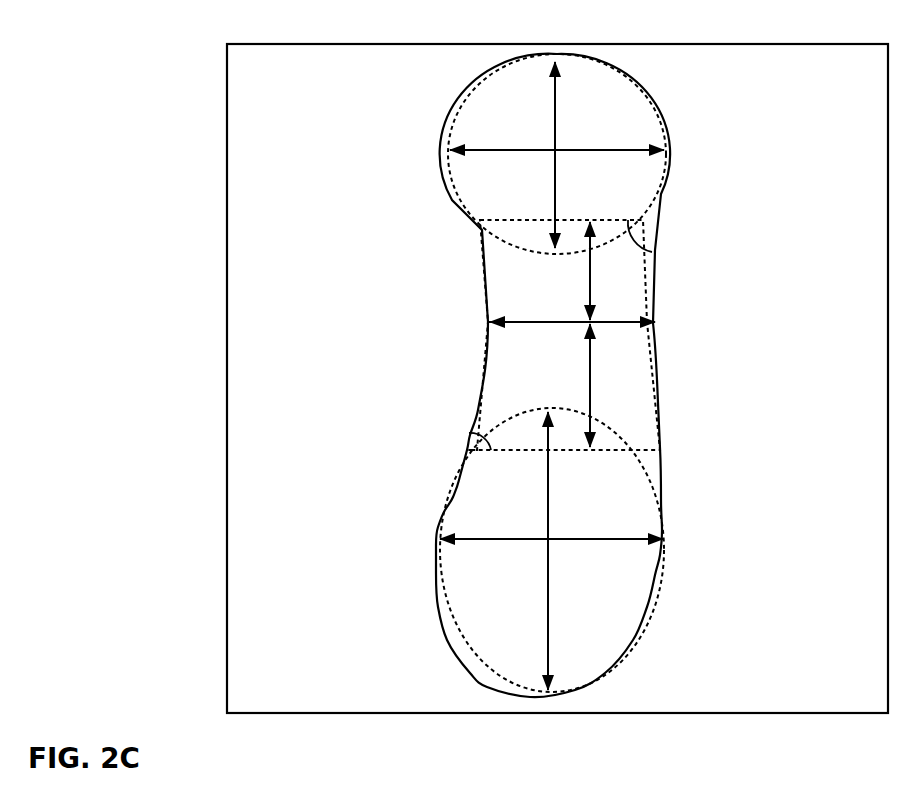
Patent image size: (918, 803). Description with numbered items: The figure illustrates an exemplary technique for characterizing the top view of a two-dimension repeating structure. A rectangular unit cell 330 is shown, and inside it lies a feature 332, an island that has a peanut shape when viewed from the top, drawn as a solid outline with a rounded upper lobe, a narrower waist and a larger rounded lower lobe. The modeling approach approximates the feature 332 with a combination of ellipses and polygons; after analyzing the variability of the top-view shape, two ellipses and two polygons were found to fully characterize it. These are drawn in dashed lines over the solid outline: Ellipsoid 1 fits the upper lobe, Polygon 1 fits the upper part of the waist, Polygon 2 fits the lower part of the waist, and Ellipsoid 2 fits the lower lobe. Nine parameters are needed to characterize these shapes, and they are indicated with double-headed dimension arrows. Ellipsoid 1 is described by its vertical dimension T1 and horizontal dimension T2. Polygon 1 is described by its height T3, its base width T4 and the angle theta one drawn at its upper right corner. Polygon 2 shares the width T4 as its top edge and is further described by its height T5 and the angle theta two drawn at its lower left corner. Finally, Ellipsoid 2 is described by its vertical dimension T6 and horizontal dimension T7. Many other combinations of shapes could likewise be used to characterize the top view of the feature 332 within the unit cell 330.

The unit cell 330 is at (557, 364).
The feature 332 is at (643, 375).
The Ellipsoid 1 / Polygon 1 is at (621, 188).
The Ellipsoid 2 / Polygon 2 is at (645, 507).
The parameter T1 is at (566, 155).
The parameter T2 is at (557, 163).
The parameter T3 is at (602, 271).
The parameter T4 is at (572, 312).
The parameter T5 is at (603, 385).
The parameter T6 is at (562, 551).
The parameter T7 is at (551, 527).